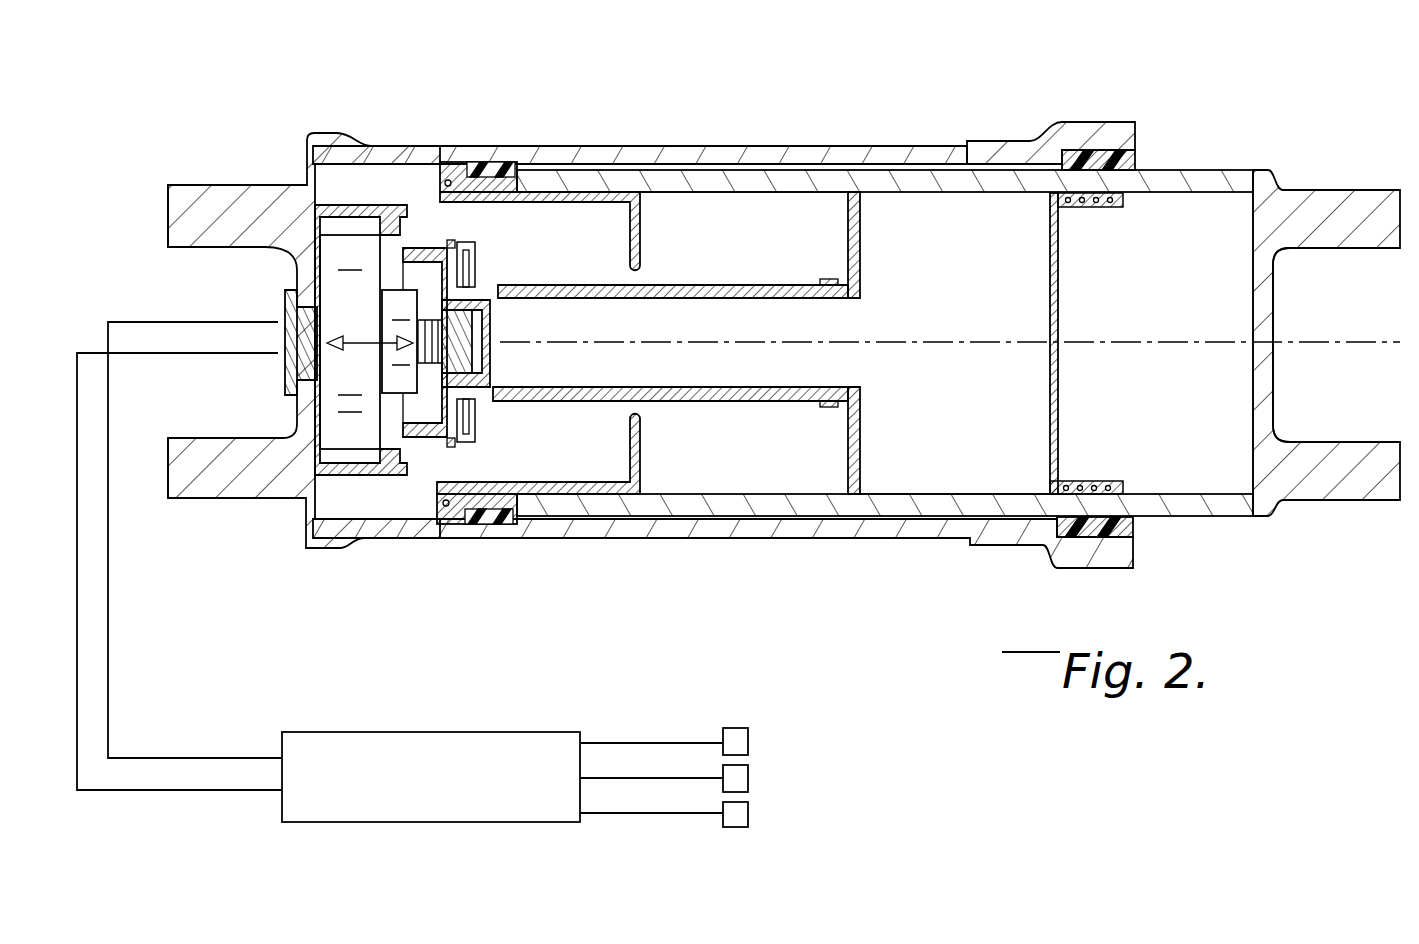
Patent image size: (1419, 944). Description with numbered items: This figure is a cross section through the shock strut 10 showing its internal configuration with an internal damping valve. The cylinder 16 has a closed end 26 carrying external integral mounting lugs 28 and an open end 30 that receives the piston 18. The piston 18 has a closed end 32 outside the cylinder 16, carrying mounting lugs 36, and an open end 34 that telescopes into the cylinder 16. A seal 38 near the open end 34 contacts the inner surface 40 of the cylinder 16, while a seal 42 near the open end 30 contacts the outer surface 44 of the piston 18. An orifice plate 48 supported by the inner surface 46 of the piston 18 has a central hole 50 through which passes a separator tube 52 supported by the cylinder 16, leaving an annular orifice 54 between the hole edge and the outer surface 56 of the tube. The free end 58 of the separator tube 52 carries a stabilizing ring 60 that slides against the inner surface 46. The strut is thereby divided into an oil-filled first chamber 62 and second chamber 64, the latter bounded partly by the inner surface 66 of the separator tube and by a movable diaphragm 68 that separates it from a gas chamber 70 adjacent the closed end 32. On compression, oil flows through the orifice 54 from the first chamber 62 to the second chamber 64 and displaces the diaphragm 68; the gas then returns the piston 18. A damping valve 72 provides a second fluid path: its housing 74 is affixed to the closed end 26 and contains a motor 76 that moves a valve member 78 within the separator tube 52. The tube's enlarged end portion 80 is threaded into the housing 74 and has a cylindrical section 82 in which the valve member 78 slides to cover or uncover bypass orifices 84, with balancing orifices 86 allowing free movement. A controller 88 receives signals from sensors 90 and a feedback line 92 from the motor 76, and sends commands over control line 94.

The shock strut 10 is at (806, 117).
The cylinder 16 is at (1088, 137).
The piston 18 is at (1290, 197).
The closed end 26 is at (298, 150).
The mounting lugs 28 is at (190, 205).
The open end 30 is at (1162, 133).
The closed end 32 is at (1288, 328).
The open end 34 is at (415, 498).
The mounting lugs 36 is at (1376, 250).
The seal 38 is at (492, 161).
The inner surface 40 is at (540, 231).
The seal 42 is at (1135, 541).
The outer surface 44 is at (577, 217).
The inner surface 46 is at (977, 197).
The orifice plate 48 is at (641, 471).
The central hole 50 is at (632, 415).
The separator tube 52 is at (752, 401).
The annular orifice 54 is at (655, 270).
The outer surface 56 is at (730, 284).
The free end 58 is at (861, 292).
The stabilizing ring 60 is at (860, 450).
The first chamber 62 is at (380, 197).
The second chamber 64 is at (980, 402).
The inner surface 66 is at (698, 388).
The movable diaphragm 68 is at (1062, 436).
The gas chamber 70 is at (1140, 273).
The damping valve 72 is at (510, 377).
The housing 74 is at (342, 204).
The motor 76 is at (418, 242).
The valve member 78 is at (474, 284).
The enlarged end portion 80 is at (475, 430).
The cylindrical section 82 is at (440, 523).
The bypass orifices 84 is at (490, 287).
The balancing orifices 86 is at (440, 437).
The controller 88 is at (445, 731).
The sensors 90 is at (750, 802).
The feedback line 92 is at (147, 758).
The control line 94 is at (150, 791).